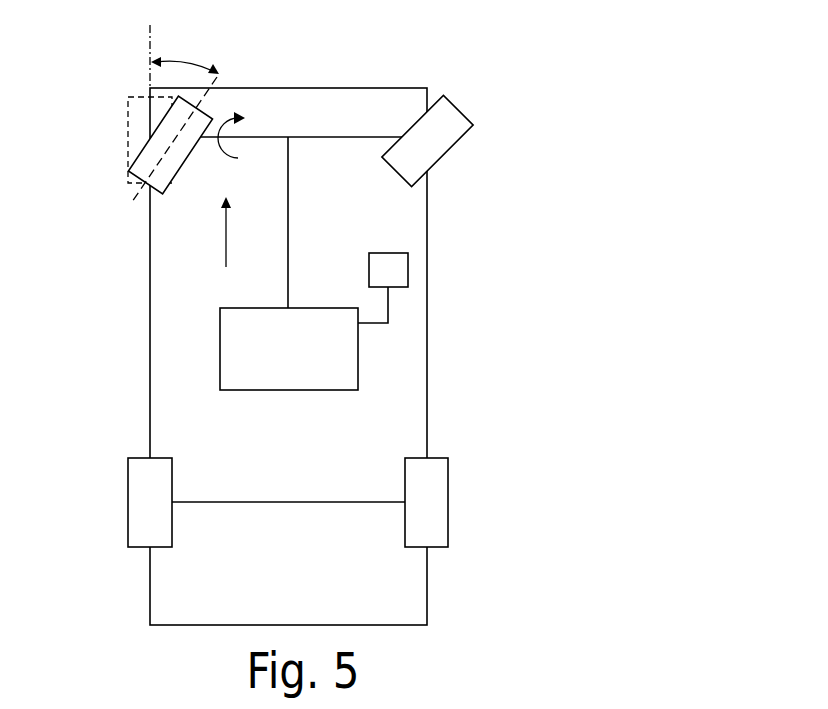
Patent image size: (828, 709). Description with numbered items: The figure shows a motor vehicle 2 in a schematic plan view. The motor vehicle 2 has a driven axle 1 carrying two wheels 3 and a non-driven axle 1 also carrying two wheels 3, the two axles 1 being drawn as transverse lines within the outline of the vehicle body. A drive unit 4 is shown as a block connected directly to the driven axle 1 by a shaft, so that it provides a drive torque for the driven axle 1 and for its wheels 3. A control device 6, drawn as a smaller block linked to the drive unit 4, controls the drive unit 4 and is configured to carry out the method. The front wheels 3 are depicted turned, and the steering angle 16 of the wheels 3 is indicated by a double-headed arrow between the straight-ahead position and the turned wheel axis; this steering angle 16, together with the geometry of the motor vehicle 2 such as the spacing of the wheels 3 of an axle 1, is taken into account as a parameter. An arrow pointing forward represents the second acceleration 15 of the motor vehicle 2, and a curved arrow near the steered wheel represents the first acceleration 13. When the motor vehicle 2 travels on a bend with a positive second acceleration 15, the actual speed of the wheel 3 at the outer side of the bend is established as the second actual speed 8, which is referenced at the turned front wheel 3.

The axle 1 is at (367, 137).
The motor vehicle 2 is at (568, 78).
The wheel 3 is at (195, 125).
The drive unit 4 is at (320, 347).
The control device 6 is at (395, 270).
The second actual speed 8 is at (145, 155).
The first acceleration 13 is at (236, 117).
The second acceleration 15 is at (211, 234).
The steering angle 16 is at (183, 62).